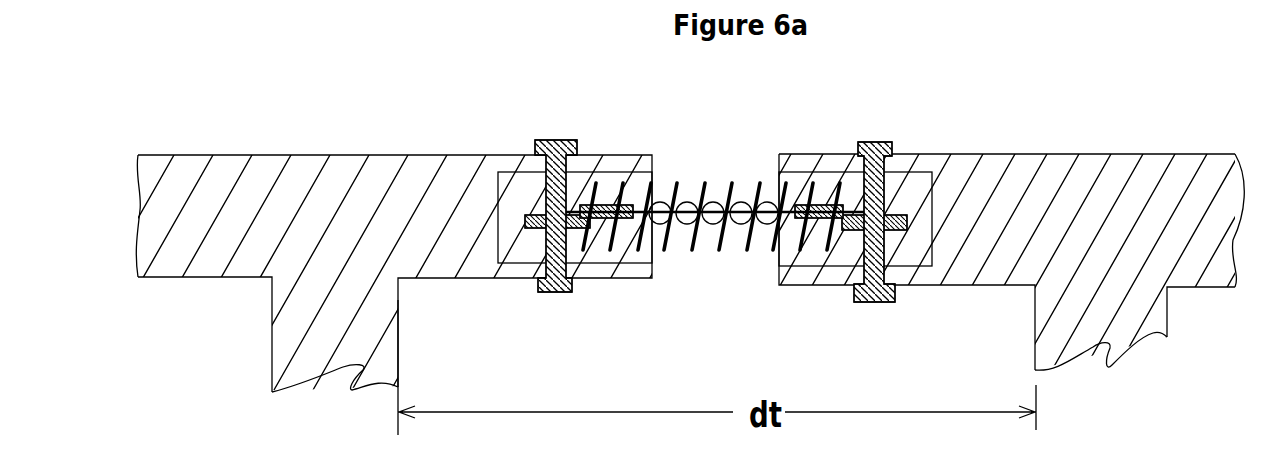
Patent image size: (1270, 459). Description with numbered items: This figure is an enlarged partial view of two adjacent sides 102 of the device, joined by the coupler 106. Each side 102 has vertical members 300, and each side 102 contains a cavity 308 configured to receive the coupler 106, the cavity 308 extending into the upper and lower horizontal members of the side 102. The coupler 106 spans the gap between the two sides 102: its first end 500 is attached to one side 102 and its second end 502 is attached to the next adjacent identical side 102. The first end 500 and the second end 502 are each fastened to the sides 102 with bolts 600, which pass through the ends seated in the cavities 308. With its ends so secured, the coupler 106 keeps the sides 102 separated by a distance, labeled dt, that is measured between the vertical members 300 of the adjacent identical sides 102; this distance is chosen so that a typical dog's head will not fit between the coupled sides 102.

The side 102 is at (315, 142).
The vertical member 300 is at (262, 373).
The first end 500 is at (527, 213).
The cavity 308 is at (515, 245).
The second end 502 is at (888, 214).
The coupler 106 is at (668, 170).
The bolt 600 is at (553, 140).